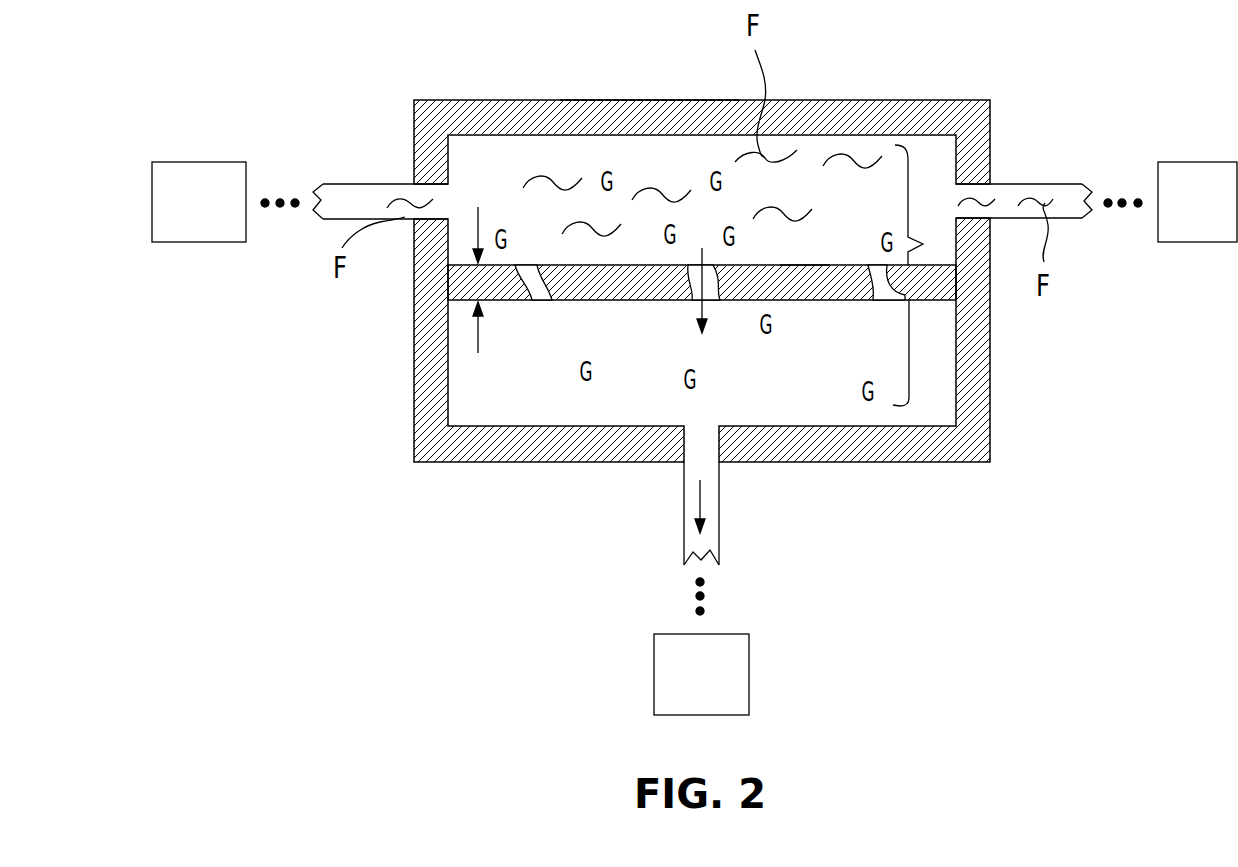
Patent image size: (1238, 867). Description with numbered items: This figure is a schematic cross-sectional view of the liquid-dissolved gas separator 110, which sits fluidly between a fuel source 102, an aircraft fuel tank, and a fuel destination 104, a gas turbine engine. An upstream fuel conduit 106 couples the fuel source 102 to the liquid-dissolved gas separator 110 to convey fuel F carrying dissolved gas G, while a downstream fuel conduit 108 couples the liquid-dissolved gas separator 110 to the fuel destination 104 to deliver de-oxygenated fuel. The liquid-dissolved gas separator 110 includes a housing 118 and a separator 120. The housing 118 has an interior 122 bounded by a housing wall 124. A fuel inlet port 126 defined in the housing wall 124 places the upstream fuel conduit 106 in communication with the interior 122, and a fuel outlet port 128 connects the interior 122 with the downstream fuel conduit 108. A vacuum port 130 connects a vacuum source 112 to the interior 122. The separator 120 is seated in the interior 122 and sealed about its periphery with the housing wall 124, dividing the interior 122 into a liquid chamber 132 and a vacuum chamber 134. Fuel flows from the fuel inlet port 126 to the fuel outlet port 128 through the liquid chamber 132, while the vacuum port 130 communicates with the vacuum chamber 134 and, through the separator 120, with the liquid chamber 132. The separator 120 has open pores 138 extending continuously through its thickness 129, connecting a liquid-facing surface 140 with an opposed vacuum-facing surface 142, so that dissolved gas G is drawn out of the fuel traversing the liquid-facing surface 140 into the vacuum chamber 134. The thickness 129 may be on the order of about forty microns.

The fuel source 102 is at (177, 219).
The fuel destination 104 is at (1186, 219).
The upstream fuel conduit 106 is at (353, 184).
The downstream fuel conduit 108 is at (1058, 184).
The liquid-dissolved gas separator 110 is at (386, 556).
The vacuum source 112 is at (679, 692).
The housing 118 is at (527, 100).
The separator 120 is at (627, 268).
The interior 122 is at (909, 352).
The housing wall 124 is at (622, 100).
The fuel inlet port 126 is at (432, 205).
The fuel outlet port 128 is at (985, 197).
The thickness 129 is at (472, 283).
The vacuum port 130 is at (704, 427).
The liquid chamber 132 is at (461, 178).
The vacuum chamber 134 is at (463, 410).
The open pores 138 is at (708, 287).
The liquid-facing surface 140 is at (792, 260).
The vacuum-facing surface 142 is at (832, 305).